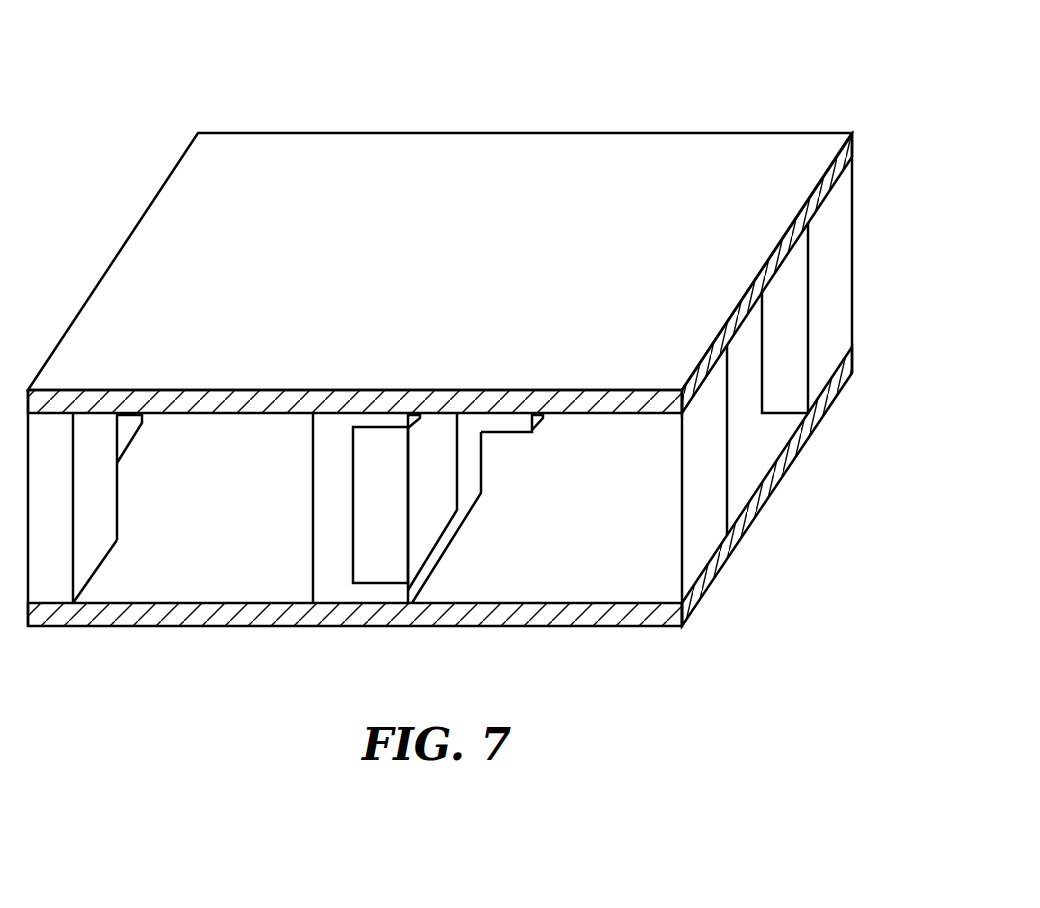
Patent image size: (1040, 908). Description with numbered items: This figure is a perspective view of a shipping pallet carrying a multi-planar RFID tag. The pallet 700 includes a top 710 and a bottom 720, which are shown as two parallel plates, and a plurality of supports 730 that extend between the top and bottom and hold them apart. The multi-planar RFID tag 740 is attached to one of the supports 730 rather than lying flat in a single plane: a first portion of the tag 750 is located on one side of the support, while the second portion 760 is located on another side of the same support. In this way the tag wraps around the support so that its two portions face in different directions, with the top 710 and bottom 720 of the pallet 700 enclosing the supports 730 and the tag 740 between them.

The pallet 700 is at (468, 354).
The top 710 is at (633, 132).
The bottom 720 is at (535, 628).
The supports 730 is at (313, 542).
The multi-planar RFID tag 740 is at (380, 558).
The first portion of the tag 750 is at (328, 537).
The second portion 760 is at (432, 527).